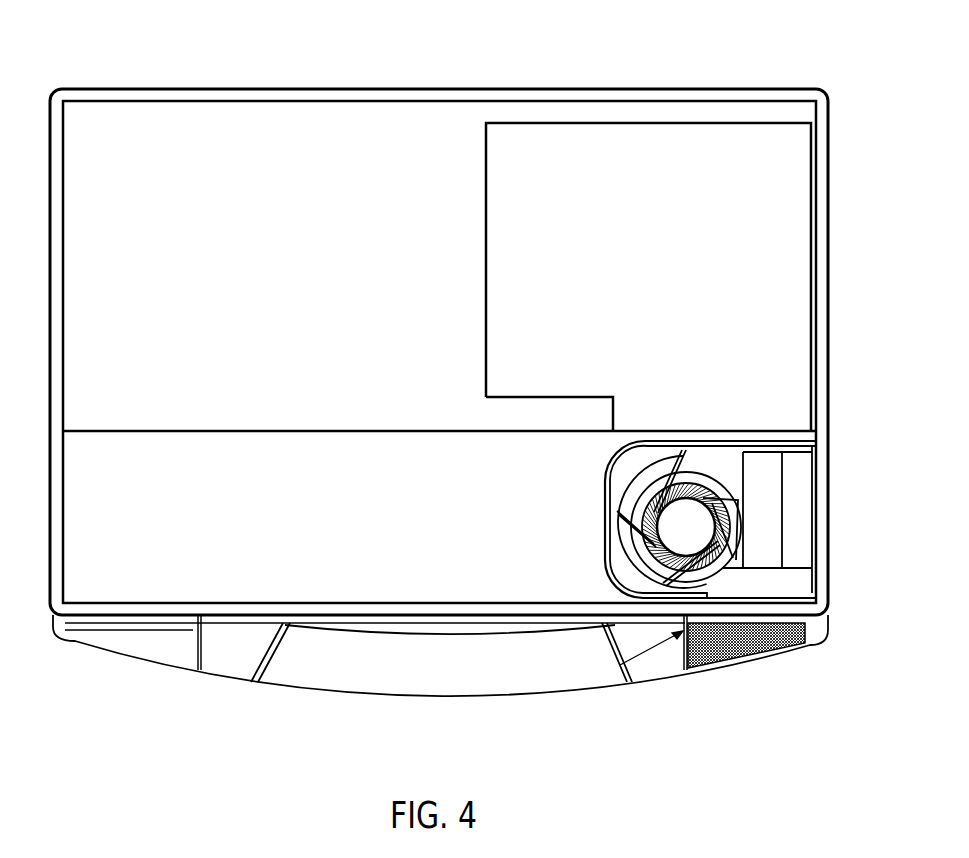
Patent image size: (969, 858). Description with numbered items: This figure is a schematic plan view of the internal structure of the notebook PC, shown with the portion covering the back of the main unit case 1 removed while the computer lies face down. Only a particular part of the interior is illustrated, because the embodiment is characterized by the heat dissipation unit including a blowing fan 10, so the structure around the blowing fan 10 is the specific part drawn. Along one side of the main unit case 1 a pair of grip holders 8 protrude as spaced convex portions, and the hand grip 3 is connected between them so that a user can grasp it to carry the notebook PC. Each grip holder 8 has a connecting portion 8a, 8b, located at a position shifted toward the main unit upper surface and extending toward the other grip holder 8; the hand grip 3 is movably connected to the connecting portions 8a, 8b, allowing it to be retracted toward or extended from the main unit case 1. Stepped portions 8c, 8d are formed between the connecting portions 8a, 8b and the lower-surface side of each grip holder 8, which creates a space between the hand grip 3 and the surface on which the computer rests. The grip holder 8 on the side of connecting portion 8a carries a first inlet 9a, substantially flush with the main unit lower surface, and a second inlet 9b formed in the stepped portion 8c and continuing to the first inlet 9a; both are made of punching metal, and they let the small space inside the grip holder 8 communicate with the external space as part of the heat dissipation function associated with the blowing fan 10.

The main unit case 1 is at (404, 89).
The hand grip 3 is at (457, 678).
The grip holder 8 is at (757, 666).
The connecting portion 8a is at (623, 663).
The connecting portion 8b is at (240, 683).
The stepped portion 8c is at (650, 680).
The stepped portion 8d is at (200, 645).
The first inlet 9a is at (770, 655).
The second inlet 9b is at (688, 653).
The blowing fan 10 is at (737, 533).